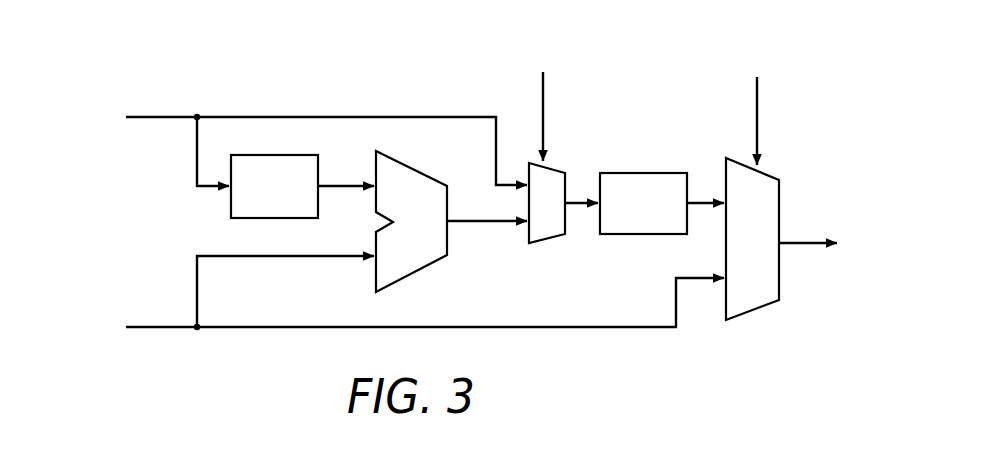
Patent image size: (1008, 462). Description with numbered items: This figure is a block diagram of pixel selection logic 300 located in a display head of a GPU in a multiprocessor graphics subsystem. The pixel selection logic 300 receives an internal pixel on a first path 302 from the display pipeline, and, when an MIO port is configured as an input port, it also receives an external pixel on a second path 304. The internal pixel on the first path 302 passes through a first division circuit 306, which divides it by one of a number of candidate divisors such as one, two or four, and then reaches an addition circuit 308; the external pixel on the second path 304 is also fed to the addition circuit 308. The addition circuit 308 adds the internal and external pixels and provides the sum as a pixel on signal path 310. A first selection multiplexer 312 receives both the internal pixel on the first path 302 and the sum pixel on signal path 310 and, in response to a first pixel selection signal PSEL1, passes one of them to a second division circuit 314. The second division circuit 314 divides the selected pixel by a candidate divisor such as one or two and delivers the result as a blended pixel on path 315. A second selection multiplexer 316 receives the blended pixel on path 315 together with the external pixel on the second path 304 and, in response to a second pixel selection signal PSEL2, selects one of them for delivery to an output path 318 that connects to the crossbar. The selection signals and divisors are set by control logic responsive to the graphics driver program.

The pixel selection logic 300 is at (214, 57).
The first path 302 is at (249, 116).
The second path 304 is at (232, 326).
The first division circuit 306 is at (231, 198).
The addition circuit 308 is at (422, 270).
The signal path 310 is at (485, 222).
The first selection multiplexer 312 is at (557, 169).
The second division circuit 314 is at (643, 173).
The path 315 is at (702, 198).
The second selection multiplexer 316 is at (757, 310).
The output path 318 is at (802, 239).